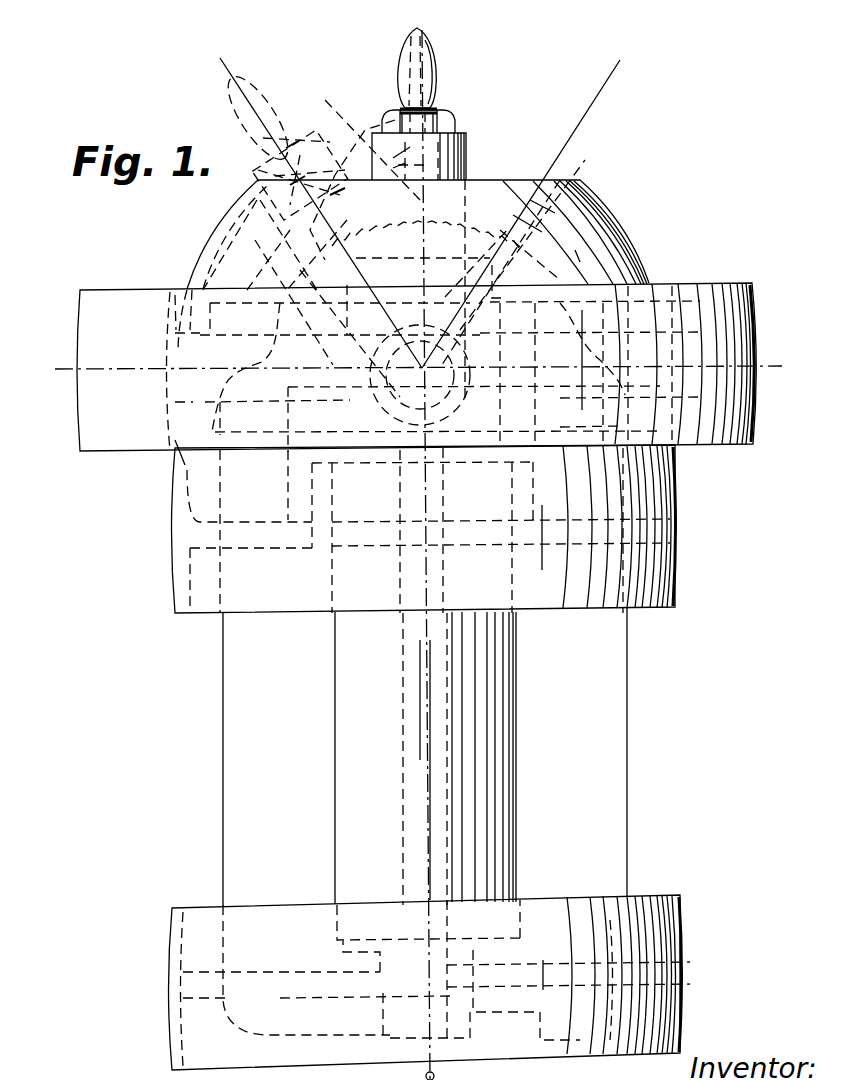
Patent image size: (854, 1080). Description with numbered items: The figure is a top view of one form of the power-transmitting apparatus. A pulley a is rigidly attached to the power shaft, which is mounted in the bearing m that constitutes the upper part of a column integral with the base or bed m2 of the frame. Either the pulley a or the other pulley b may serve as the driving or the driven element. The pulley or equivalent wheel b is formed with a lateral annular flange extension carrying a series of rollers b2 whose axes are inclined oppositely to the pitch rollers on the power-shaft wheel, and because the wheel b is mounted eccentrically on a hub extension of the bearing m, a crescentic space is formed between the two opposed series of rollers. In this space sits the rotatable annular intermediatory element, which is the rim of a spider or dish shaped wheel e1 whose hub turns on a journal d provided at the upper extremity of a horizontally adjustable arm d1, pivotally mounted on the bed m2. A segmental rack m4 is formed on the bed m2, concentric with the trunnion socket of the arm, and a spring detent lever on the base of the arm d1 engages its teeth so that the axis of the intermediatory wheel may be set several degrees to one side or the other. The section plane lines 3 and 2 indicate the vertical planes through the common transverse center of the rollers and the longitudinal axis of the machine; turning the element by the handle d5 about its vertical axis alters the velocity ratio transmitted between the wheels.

The section plane line 2 is at (418, 31).
The section plane line 3 is at (417, 367).
The handle d5 is at (400, 70).
The journal d is at (437, 112).
The horizontally adjustable arm d1 is at (462, 130).
The segmental rack m4 is at (482, 224).
The spider or dish shaped wheel e1 is at (413, 265).
The rollers b2 is at (416, 316).
The pulley b is at (424, 526).
The bearing m is at (369, 759).
The base or bed m2 is at (583, 751).
The pulley a is at (430, 982).